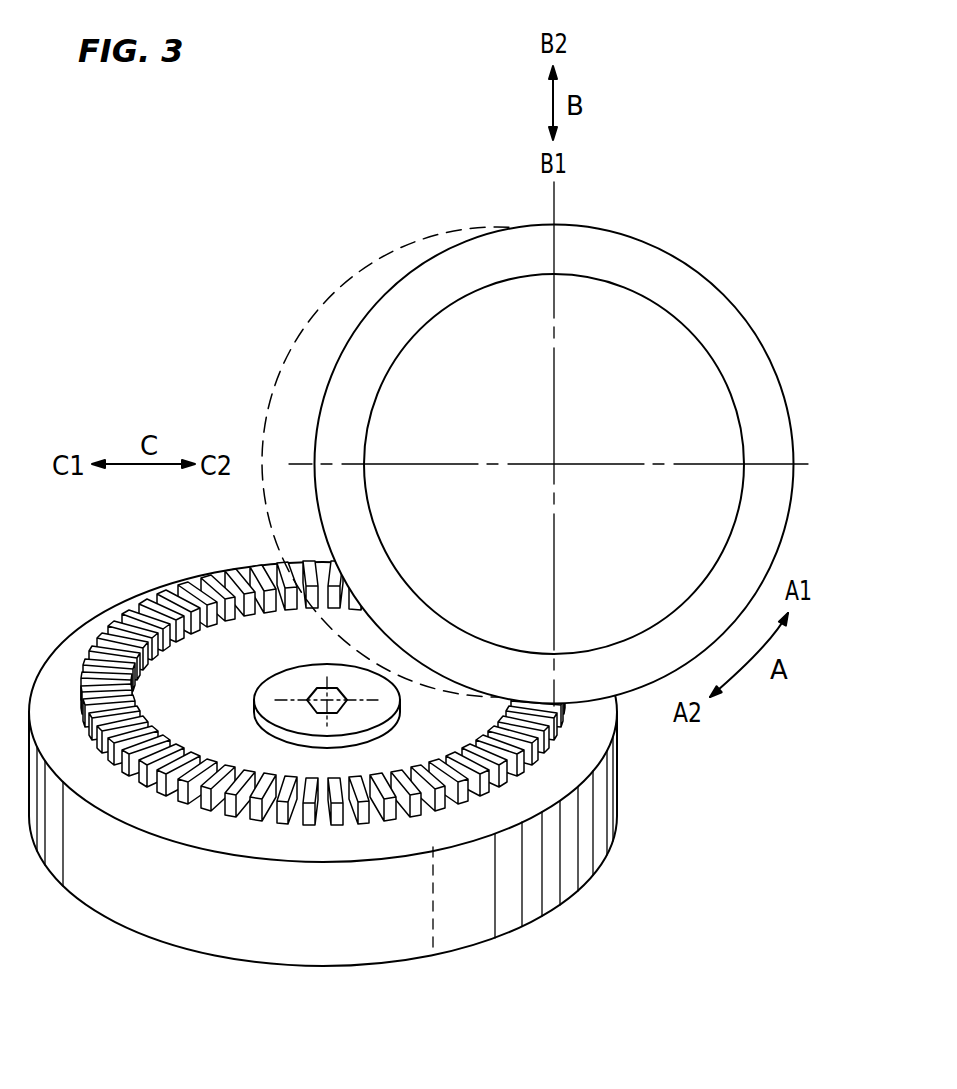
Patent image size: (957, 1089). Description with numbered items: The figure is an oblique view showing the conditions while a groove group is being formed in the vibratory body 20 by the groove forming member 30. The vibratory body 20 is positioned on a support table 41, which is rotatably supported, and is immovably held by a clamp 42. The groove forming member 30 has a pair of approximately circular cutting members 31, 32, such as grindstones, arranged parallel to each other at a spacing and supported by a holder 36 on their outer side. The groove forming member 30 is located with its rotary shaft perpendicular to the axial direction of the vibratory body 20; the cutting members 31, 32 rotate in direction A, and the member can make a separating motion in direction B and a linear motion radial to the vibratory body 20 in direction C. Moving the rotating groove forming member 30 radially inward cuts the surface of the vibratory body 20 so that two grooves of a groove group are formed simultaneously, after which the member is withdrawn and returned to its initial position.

The vibratory body 20 is at (232, 806).
The groove forming member 30 is at (564, 444).
The cutting member 31 is at (554, 445).
The cutting member 32 is at (638, 275).
The holder 36 is at (642, 357).
The support table 41 is at (105, 888).
The clamp 42 is at (268, 700).